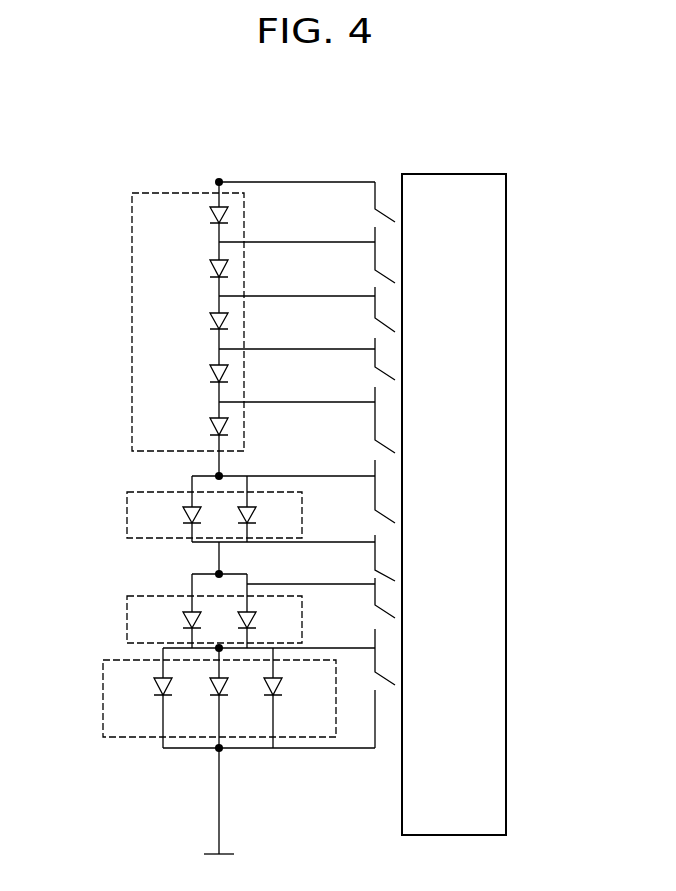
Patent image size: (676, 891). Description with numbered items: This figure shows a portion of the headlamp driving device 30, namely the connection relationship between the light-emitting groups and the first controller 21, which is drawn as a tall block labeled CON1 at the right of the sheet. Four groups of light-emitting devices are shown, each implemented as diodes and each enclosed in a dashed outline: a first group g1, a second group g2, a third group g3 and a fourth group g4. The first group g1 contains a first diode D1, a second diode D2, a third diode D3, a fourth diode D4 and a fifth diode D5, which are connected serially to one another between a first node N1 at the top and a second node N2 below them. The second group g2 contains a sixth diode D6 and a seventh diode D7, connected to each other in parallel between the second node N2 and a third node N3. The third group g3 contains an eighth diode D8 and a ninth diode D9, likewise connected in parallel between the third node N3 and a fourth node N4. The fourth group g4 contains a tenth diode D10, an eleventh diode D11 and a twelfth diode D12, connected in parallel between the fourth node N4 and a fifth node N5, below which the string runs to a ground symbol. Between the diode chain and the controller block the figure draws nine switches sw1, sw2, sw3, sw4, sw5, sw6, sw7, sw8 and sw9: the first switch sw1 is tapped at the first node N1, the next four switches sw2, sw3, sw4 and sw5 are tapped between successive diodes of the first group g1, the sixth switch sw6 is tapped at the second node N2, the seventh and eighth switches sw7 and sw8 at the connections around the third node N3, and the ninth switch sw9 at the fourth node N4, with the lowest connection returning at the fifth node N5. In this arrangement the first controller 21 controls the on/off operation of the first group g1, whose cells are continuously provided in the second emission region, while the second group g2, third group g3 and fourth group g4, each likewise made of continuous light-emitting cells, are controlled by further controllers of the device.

The headlamp driving device 30 is at (112, 122).
The first controller 21 is at (506, 594).
The control signal CON1 is at (454, 504).
The first diode D1 is at (195, 218).
The second diode D2 is at (195, 272).
The third diode D3 is at (195, 324).
The fourth diode D4 is at (195, 377).
The fifth diode D5 is at (195, 430).
The sixth diode D6 is at (173, 517).
The seventh diode D7 is at (266, 517).
The eighth diode D8 is at (173, 622).
The ninth diode D9 is at (266, 622).
The tenth diode D10 is at (140, 689).
The eleventh diode D11 is at (239, 700).
The twelfth diode D12 is at (299, 689).
The first node N1 is at (204, 170).
The second node N2 is at (204, 467).
The third node N3 is at (204, 564).
The fourth node N4 is at (204, 660).
The fifth node N5 is at (204, 760).
The first group g1 is at (132, 323).
The second group g2 is at (127, 515).
The third group g3 is at (127, 618).
The fourth group g4 is at (103, 698).
The switch sw1 is at (414, 207).
The switch sw2 is at (414, 262).
The switch sw3 is at (414, 317).
The switch sw4 is at (414, 365).
The switch sw5 is at (414, 426).
The switch sw6 is at (414, 498).
The switch sw7 is at (414, 563).
The switch sw8 is at (414, 605).
The switch sw9 is at (414, 663).